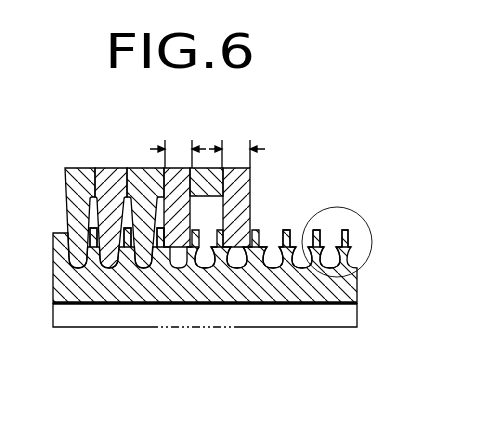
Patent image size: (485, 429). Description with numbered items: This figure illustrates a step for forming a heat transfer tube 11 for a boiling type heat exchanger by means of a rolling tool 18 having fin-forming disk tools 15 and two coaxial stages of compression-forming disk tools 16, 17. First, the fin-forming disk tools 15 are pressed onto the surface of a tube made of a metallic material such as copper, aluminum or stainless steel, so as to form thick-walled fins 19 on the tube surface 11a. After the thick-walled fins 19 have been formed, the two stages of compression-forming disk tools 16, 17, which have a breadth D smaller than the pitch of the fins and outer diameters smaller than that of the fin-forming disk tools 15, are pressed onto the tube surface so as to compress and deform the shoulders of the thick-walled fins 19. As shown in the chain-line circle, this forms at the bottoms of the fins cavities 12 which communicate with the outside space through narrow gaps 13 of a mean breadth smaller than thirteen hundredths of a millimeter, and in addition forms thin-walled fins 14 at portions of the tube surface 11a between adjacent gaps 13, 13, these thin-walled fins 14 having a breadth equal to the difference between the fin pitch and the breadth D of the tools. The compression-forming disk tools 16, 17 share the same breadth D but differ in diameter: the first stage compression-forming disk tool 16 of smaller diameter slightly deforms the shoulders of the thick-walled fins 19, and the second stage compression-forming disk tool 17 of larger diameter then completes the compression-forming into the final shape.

The heat transfer tube 11 is at (192, 293).
The tube surface 11a is at (271, 248).
The cavities 12 is at (270, 267).
The narrow gaps 13 is at (333, 247).
The thin-walled fins 14 is at (347, 257).
The fin-forming disk tools 15 is at (65, 193).
The first stage compression-forming disk tool 16 is at (162, 167).
The second stage compression-forming disk tool 17 is at (250, 170).
The rolling tool 18 is at (208, 168).
The thick-walled fins 19 is at (93, 265).
The breadth of compression-forming disk tools D is at (207, 153).